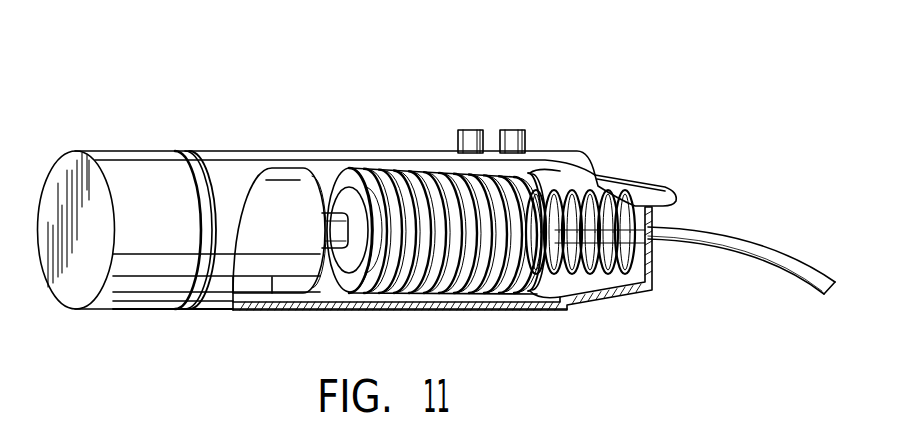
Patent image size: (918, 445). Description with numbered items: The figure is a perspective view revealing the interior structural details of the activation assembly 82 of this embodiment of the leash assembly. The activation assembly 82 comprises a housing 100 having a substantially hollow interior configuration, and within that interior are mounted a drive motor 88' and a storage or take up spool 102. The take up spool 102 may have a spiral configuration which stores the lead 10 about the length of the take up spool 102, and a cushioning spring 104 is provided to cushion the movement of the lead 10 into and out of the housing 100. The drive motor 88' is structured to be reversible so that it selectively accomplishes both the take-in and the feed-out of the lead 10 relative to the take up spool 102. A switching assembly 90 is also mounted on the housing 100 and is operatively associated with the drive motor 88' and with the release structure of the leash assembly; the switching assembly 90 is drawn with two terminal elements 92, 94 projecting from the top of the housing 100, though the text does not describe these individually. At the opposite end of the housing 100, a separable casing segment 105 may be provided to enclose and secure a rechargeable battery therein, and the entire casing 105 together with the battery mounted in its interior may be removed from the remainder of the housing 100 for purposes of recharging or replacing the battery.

The lead 10 is at (748, 243).
The activation assembly 82 is at (175, 323).
The drive motor 88' is at (274, 274).
The switching assembly 90 is at (492, 81).
The terminal pin 92 is at (468, 130).
The terminal pin 94 is at (515, 128).
The housing 100 is at (243, 163).
The take up spool 102 is at (477, 317).
The cushioning spring 104 is at (578, 282).
The casing segment 105 is at (122, 150).